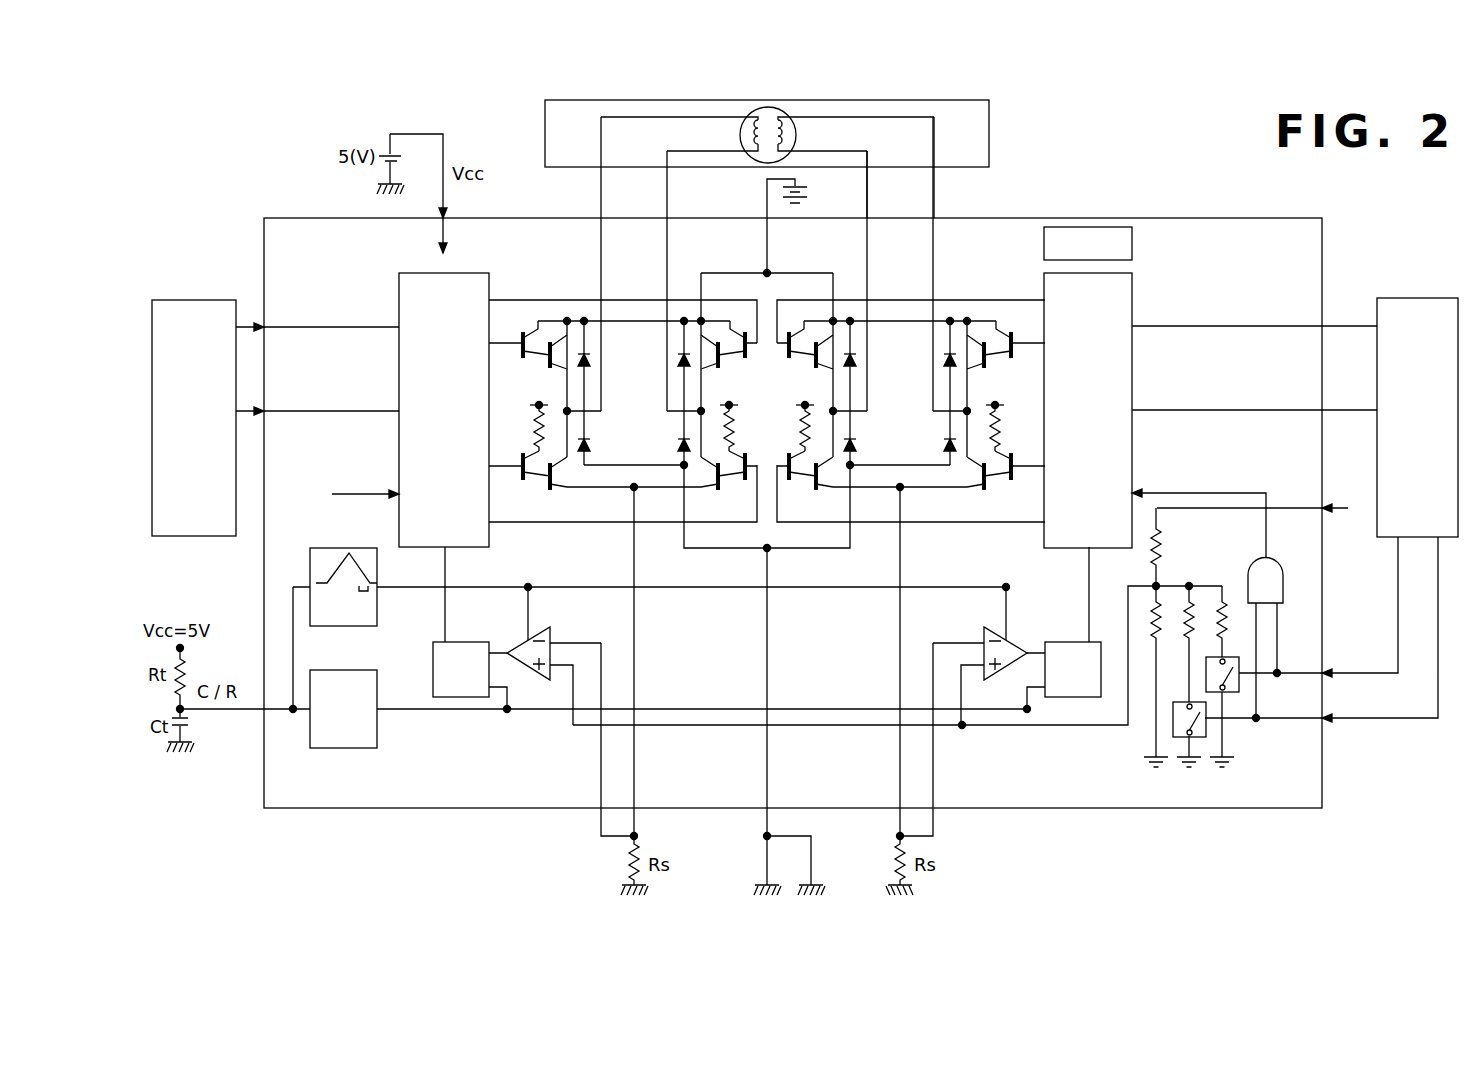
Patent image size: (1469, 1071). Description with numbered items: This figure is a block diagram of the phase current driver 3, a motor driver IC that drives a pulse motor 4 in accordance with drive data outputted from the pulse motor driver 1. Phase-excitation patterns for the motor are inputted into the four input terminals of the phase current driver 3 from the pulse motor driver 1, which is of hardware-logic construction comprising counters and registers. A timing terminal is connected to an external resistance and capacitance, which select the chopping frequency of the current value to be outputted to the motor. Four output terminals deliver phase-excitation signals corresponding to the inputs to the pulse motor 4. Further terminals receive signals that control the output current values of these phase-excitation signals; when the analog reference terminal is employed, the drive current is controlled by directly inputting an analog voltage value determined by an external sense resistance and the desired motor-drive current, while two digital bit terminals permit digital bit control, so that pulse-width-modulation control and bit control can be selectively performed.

The pulse motor driver 1 is at (186, 300).
The phase current driver 3 is at (1210, 218).
The pulse motor 4 is at (989, 130).